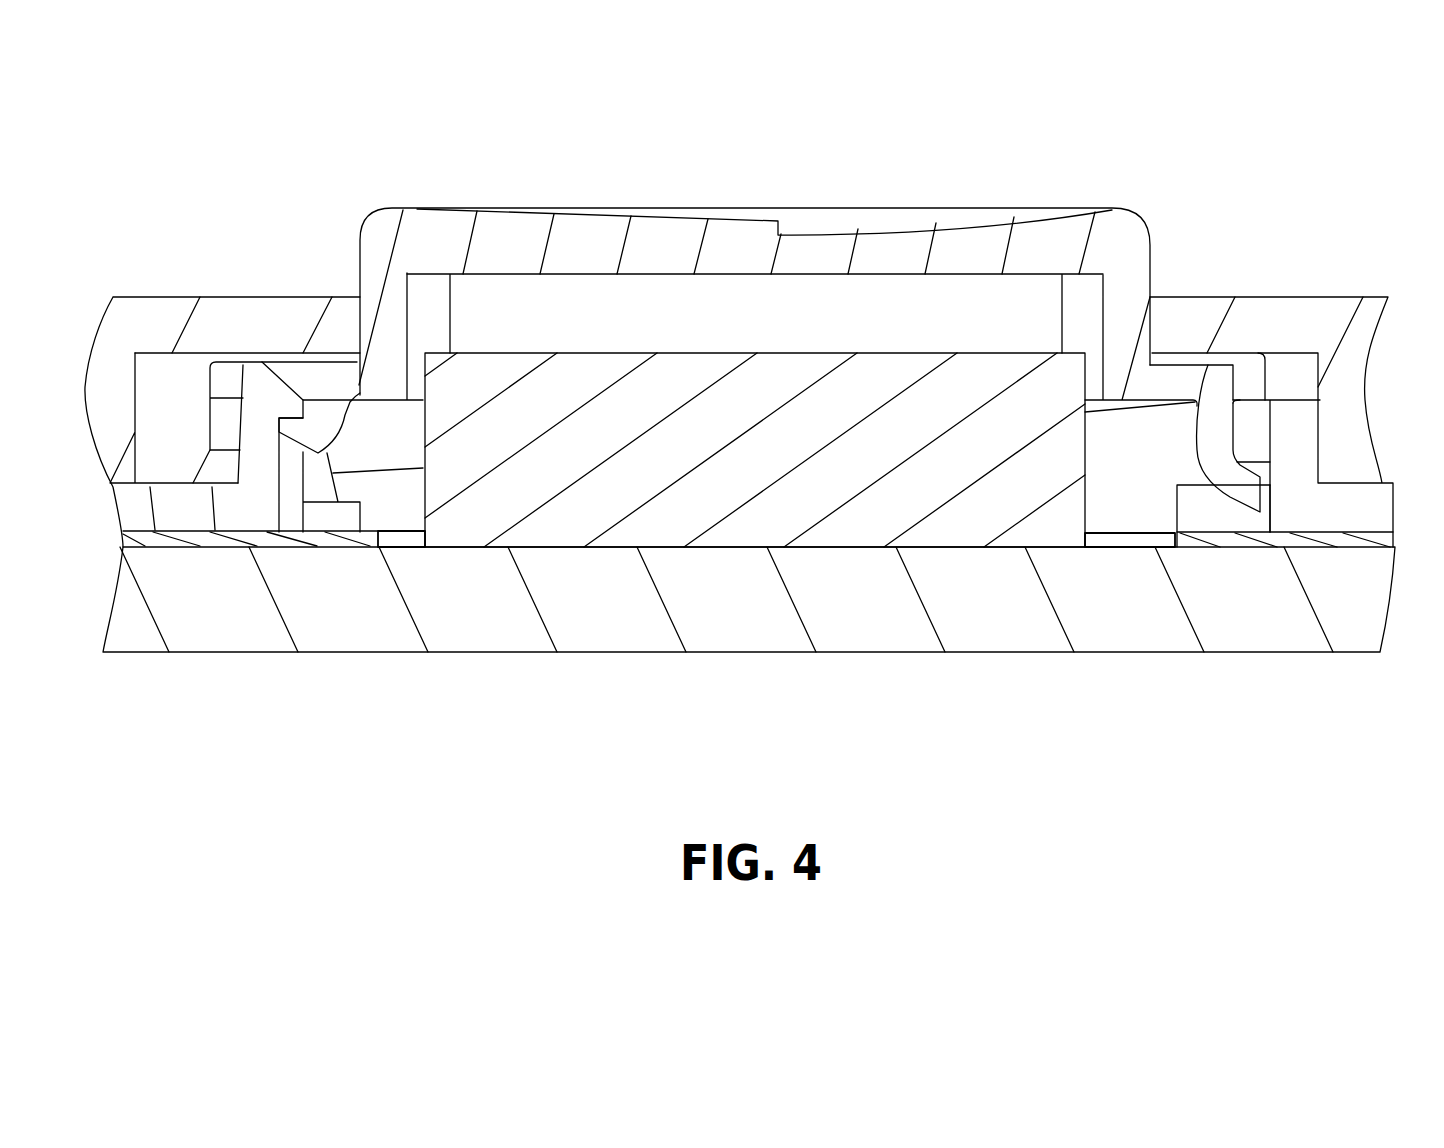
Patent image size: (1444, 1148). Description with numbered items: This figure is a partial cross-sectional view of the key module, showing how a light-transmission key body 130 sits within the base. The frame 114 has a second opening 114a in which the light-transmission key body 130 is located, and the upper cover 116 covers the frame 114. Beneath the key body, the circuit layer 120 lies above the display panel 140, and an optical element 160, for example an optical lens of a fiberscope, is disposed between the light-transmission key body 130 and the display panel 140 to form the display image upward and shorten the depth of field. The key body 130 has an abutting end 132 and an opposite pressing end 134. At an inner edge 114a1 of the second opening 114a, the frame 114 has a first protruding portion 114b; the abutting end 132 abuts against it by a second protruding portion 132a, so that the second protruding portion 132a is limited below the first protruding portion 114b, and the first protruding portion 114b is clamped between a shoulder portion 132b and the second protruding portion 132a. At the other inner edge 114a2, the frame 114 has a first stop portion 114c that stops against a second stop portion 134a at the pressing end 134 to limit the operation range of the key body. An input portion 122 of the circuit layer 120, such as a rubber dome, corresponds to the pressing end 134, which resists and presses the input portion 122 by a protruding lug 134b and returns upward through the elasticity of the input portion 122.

The frame 114 is at (1318, 510).
The second opening 114a is at (1212, 520).
The inner edge 114a1 is at (1286, 523).
The another inner edge 114a2 is at (264, 486).
The first protruding portion 114b is at (1255, 432).
The first stop portion 114c is at (262, 404).
The upper cover 116 is at (1328, 320).
The circuit layer 120 is at (1385, 543).
The input portion 122 is at (317, 477).
The light-transmission key body 130 is at (652, 248).
The abutting end 132 is at (1133, 382).
The second protruding portion 132a is at (1227, 478).
The shoulder portion 132b is at (1253, 387).
The pressing end 134 is at (376, 384).
The second stop portion 134a is at (312, 418).
The protruding lug 134b is at (230, 392).
The display panel 140 is at (997, 608).
The optical element 160 is at (805, 490).